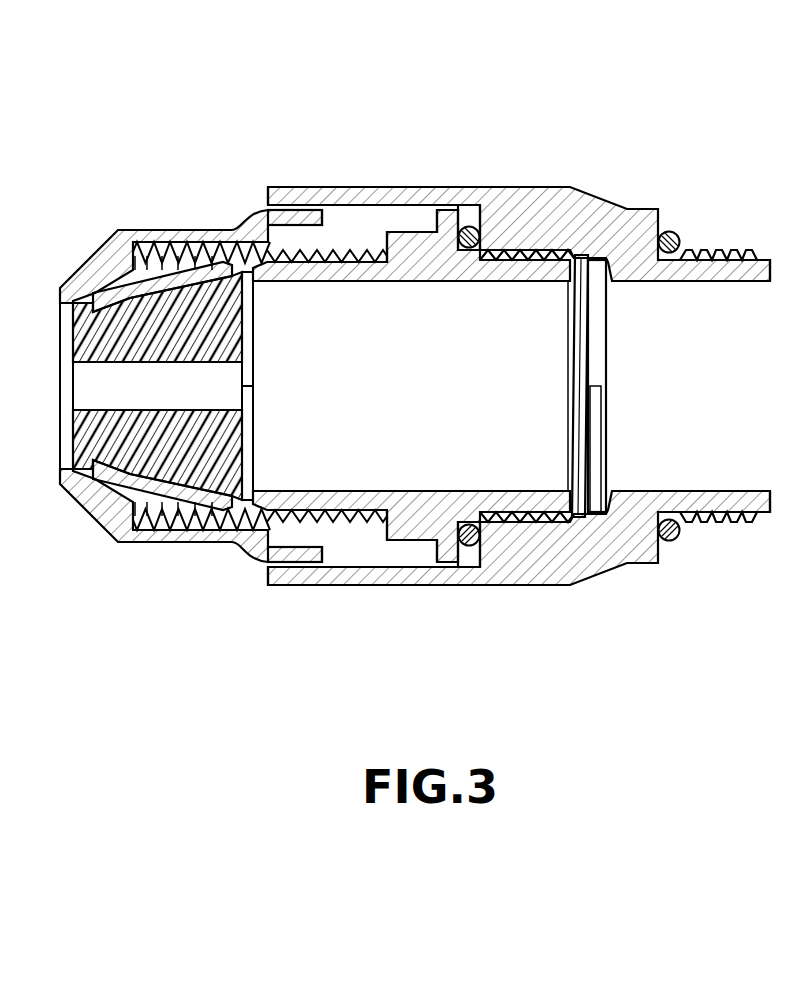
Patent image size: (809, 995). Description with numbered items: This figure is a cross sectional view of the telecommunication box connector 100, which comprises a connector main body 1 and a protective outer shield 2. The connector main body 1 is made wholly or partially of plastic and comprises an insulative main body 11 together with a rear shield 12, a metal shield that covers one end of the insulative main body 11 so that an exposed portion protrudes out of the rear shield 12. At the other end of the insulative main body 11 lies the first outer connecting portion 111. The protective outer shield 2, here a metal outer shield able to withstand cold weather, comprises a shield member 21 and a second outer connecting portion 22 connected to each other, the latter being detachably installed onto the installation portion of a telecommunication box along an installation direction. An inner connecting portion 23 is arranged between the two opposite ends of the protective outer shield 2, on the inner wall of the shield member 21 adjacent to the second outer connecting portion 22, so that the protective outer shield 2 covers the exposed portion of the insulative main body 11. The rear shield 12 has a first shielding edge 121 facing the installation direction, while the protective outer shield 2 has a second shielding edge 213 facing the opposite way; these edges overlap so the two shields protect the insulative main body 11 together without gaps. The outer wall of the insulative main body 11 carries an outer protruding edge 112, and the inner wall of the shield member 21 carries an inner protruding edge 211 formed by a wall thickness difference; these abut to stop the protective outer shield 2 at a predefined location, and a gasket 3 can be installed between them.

The telecommunication box connector 100 is at (222, 44).
The connector main body 1 is at (317, 419).
The insulative main body 11 is at (413, 441).
The first outer connecting portion 111 is at (525, 506).
The outer protruding edge 112 is at (447, 552).
The rear shield 12 is at (225, 391).
The first shielding edge 121 is at (323, 221).
The protective outer shield 2 is at (493, 417).
The shield member 21 is at (487, 403).
The inner protruding edge 211 is at (480, 552).
The second shielding edge 213 is at (268, 209).
The second outer connecting portion 22 is at (725, 514).
The inner connecting portion 23 is at (520, 518).
The gasket 3 is at (463, 227).